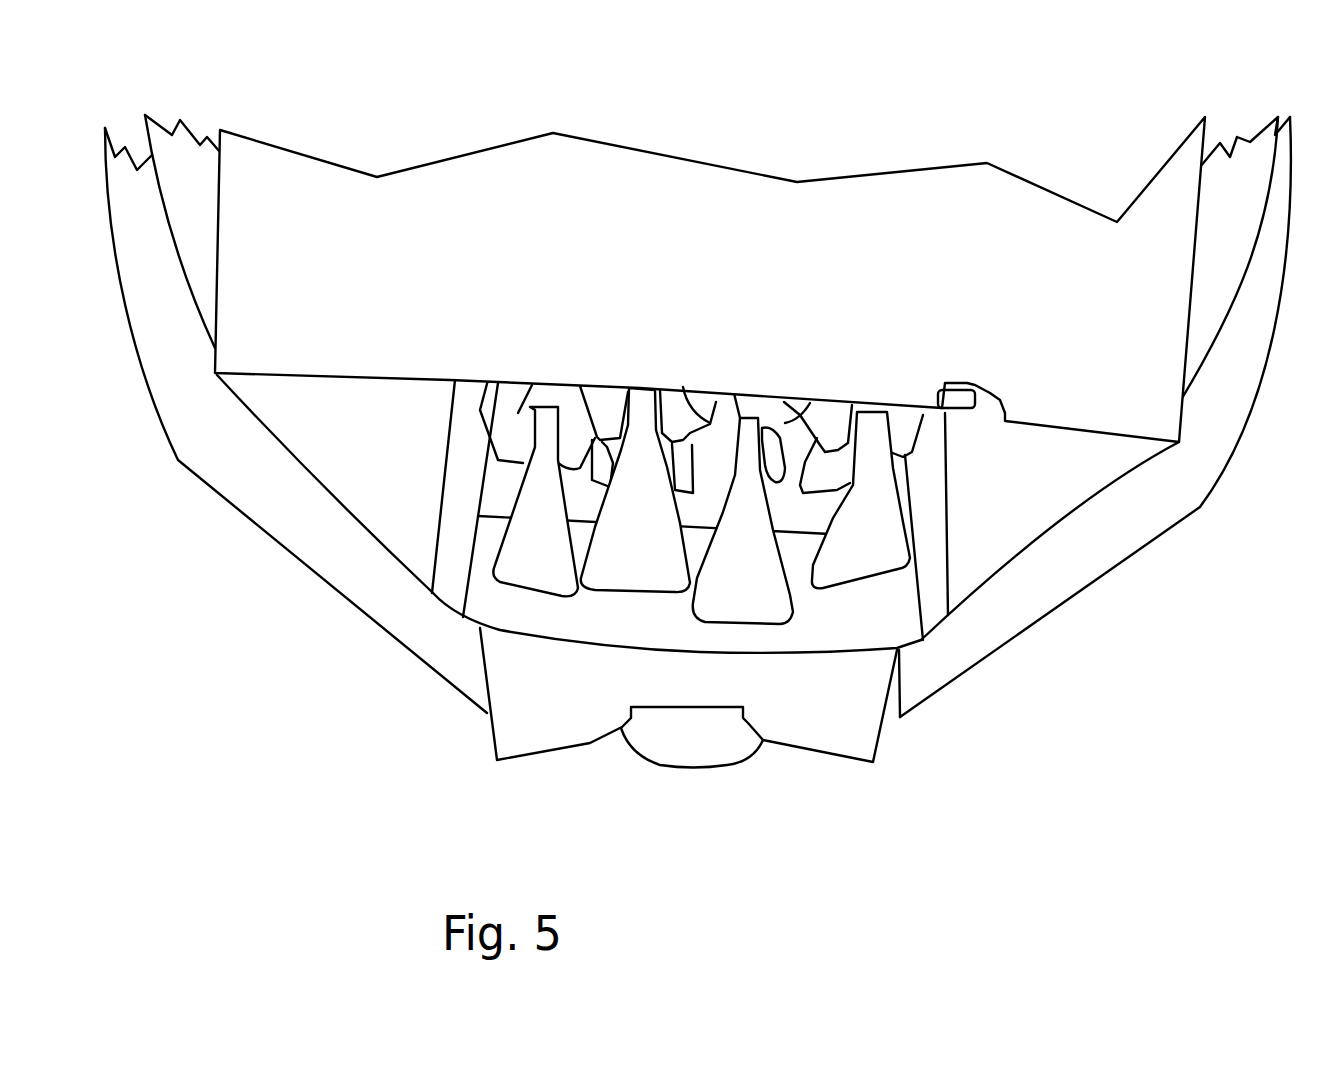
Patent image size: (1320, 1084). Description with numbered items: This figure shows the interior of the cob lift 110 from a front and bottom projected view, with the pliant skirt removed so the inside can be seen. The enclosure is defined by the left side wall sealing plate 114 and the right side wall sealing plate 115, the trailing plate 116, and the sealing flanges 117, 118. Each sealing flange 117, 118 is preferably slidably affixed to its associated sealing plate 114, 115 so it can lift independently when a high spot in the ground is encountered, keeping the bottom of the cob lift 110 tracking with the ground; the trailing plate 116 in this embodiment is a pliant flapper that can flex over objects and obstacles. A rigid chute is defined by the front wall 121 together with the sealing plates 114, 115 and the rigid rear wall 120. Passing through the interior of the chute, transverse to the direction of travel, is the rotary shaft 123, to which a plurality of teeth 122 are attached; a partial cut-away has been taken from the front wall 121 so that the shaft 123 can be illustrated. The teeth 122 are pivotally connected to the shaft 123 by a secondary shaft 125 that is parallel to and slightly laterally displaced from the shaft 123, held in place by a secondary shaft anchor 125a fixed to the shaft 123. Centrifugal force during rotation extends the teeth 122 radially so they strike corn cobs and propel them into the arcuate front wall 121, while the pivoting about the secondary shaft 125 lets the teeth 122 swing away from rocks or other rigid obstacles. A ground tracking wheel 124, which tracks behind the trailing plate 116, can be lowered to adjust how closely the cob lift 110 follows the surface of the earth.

The cob lift 110 is at (753, 85).
The left side wall sealing plate 114 is at (384, 453).
The right side wall sealing plate 115 is at (1059, 485).
The trailing plate 116 is at (504, 771).
The sealing flange 117 is at (377, 578).
The sealing flange 118 is at (1084, 575).
The rigid rear wall 120 is at (558, 620).
The front wall 121 is at (540, 260).
The teeth 122 is at (885, 561).
The rotary shaft 123 is at (982, 403).
The ground tracking wheel 124 is at (695, 780).
The secondary shaft 125 is at (762, 427).
The secondary shaft anchor 125a is at (683, 387).